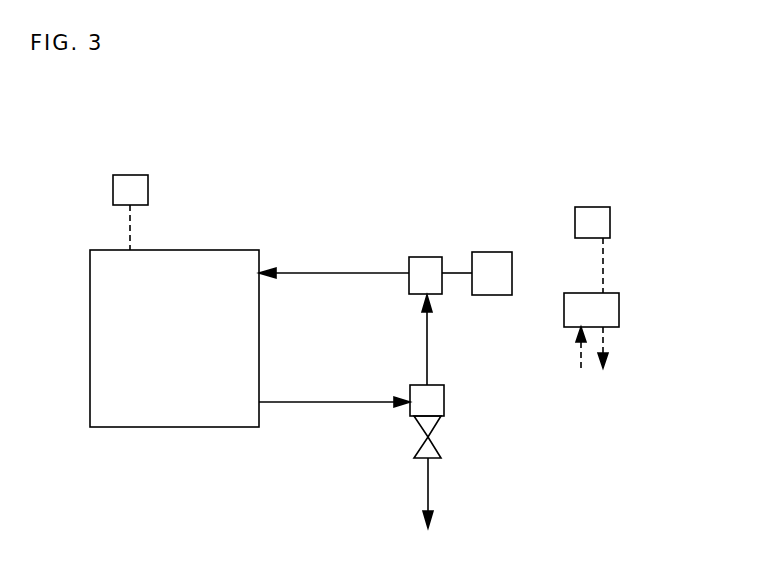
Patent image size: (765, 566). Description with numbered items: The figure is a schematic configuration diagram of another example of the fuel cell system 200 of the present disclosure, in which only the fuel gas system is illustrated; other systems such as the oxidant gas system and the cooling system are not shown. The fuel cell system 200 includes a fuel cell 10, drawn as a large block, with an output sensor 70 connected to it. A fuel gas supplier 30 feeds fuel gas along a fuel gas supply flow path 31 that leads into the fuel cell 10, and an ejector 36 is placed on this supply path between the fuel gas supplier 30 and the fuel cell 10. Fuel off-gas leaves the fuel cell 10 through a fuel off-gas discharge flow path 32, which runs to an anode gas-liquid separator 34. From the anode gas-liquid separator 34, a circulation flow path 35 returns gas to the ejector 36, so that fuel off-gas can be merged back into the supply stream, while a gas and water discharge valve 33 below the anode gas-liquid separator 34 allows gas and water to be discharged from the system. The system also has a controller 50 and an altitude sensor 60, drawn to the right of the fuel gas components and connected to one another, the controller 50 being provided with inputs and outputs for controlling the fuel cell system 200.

The fuel cell system 200 is at (606, 100).
The fuel cell 10 is at (90, 343).
The output sensor 70 is at (113, 196).
The fuel gas supply flow path 31 is at (343, 273).
The ejector 36 is at (412, 257).
The fuel gas supplier 30 is at (503, 252).
The circulation flow path 35 is at (427, 320).
The anode gas-liquid separator 34 is at (444, 388).
The fuel off-gas discharge flow path 32 is at (428, 485).
The gas and water discharge valve 33 is at (435, 440).
The altitude sensor 60 is at (610, 215).
The controller 50 is at (619, 310).